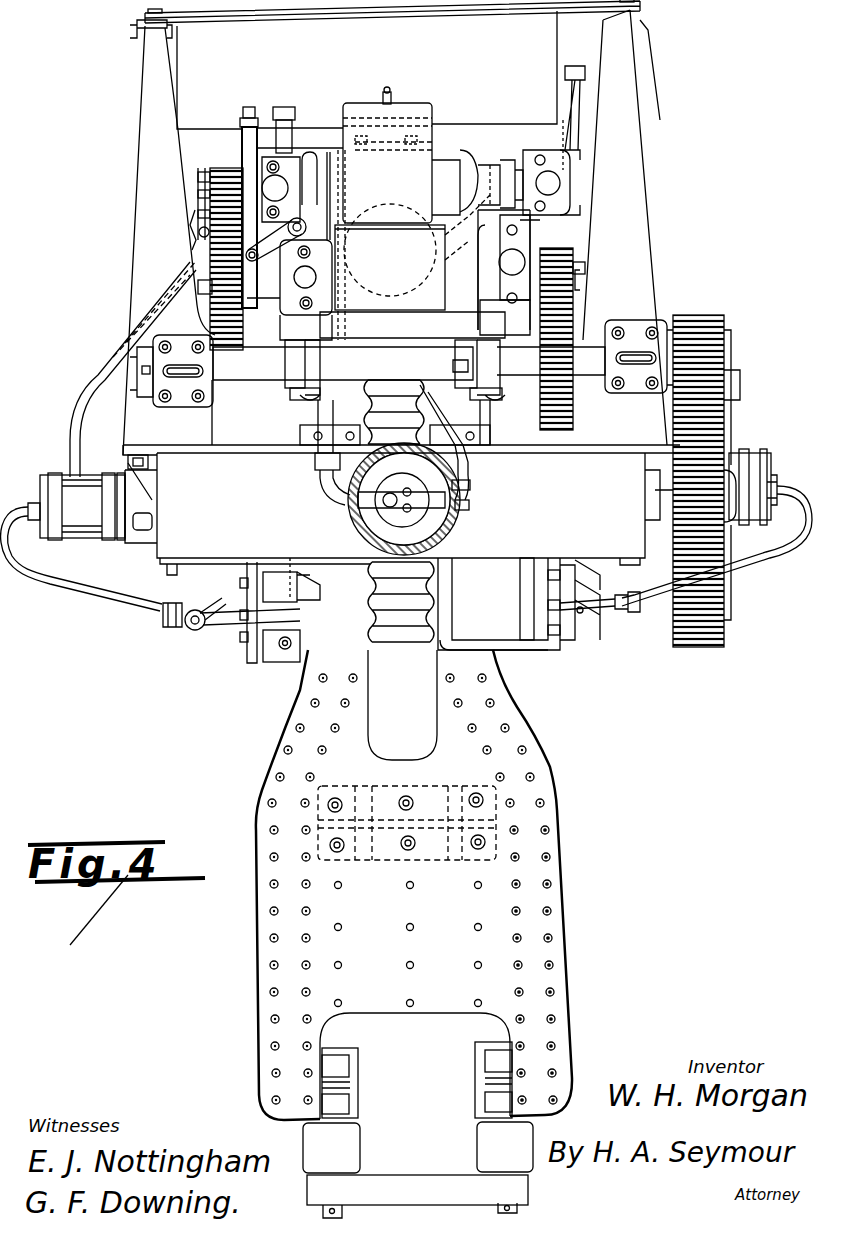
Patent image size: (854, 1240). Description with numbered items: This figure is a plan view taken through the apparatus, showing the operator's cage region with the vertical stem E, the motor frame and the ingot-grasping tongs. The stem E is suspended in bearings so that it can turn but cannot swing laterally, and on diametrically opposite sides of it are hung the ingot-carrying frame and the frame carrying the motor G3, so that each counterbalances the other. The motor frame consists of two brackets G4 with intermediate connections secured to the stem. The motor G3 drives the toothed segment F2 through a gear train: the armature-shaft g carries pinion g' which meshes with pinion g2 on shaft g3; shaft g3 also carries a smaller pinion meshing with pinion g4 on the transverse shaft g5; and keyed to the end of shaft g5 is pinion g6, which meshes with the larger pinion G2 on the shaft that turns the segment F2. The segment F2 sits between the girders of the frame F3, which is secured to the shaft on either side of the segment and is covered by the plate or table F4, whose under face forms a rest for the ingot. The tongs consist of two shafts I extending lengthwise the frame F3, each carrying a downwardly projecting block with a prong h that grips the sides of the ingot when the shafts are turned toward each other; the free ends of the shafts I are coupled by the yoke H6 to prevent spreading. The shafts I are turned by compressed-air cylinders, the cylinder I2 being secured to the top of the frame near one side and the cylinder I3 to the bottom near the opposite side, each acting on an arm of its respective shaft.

The pinion g' is at (278, 223).
The armature-shaft g is at (447, 140).
The brackets G4 is at (390, 232).
The motor G3 is at (390, 198).
The shaft g3 is at (448, 285).
The pinion g2 is at (233, 328).
The pinion g4 is at (575, 300).
The pinion g6 is at (724, 330).
The transverse shaft g5 is at (428, 355).
The stem E is at (455, 520).
The segment F2 is at (420, 598).
The cylinder I2 is at (519, 604).
The cylinder I3 is at (268, 660).
The pinion G2 is at (724, 610).
The frame F3 is at (362, 748).
The plate or table F4 is at (468, 895).
The shafts I is at (340, 1048).
The prong h is at (360, 1148).
The yoke H6 is at (417, 1196).